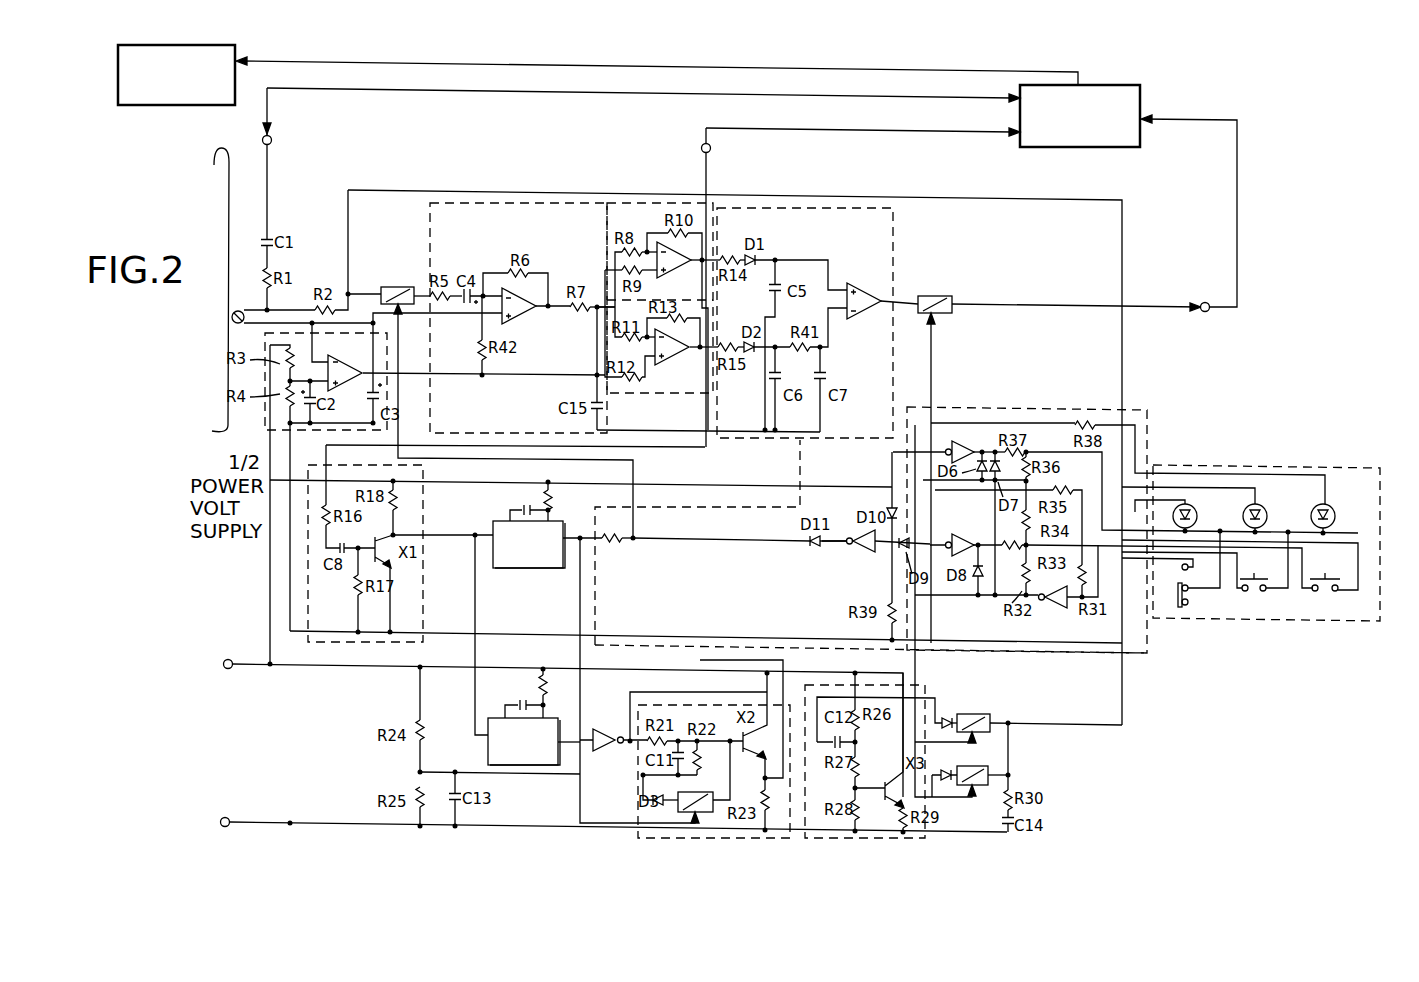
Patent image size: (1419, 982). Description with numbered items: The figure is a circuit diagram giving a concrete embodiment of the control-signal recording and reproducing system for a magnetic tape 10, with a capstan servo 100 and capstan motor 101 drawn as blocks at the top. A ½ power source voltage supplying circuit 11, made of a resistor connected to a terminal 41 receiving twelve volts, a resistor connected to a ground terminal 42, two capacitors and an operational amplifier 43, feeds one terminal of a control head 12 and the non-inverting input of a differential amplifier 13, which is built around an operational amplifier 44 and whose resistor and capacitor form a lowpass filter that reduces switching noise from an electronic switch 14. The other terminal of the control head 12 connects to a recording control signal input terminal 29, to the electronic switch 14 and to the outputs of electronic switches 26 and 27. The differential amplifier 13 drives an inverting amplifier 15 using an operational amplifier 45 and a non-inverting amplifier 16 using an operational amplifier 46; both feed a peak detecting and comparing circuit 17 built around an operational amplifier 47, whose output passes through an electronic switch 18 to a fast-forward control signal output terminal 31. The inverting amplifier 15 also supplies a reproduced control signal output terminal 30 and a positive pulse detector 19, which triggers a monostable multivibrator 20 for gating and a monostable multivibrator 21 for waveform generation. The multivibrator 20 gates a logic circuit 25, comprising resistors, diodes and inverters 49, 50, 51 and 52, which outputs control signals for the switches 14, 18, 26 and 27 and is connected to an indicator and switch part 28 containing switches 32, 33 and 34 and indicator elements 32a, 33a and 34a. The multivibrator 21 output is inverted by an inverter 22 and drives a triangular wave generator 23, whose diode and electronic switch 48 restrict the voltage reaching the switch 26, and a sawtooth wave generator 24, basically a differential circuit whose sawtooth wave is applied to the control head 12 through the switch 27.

The magnetic tape 10 is at (226, 231).
The ½ power source voltage supplying circuit 11 is at (265, 412).
The control head 12 is at (237, 310).
The differential amplifier 13 is at (469, 203).
The electronic switch 14 is at (397, 286).
The inverting amplifier 15 is at (621, 203).
The non-inverting amplifier 16 is at (643, 432).
The peak detecting and comparing circuit 17 is at (780, 208).
The electronic switch 18 is at (941, 453).
The positive pulse detector 19 is at (284, 575).
The monostable multivibrator for gating 20 is at (529, 568).
The monostable multivibrator for waveform generation 21 is at (488, 745).
The inverter 22 is at (605, 728).
The triangular wave generator 23 is at (655, 842).
The sawtooth wave generator 24 is at (932, 840).
The logic circuit 25 is at (966, 407).
The electronic switch 26 is at (974, 717).
The electronic switch 27 is at (991, 773).
The indicator and switch part 28 is at (1196, 465).
The recording control signal input terminal 29 is at (272, 140).
The reproduced control signal output terminal 30 is at (711, 146).
The fast-forward control signal output terminal 31 is at (1203, 302).
The switch 32 is at (1172, 608).
The switch 33 is at (1255, 611).
The switch 34 is at (1325, 611).
The indicator element 32a is at (1197, 516).
The indicator element 33a is at (1267, 516).
The indicator element 34a is at (1335, 516).
The terminal 41 is at (228, 670).
The ground terminal 42 is at (225, 828).
The operational amplifier 43 is at (355, 363).
The operational amplifier 44 is at (530, 316).
The operational amplifier 45 is at (688, 271).
The operational amplifier 46 is at (686, 357).
The operational amplifier 47 is at (858, 287).
The electronic switch 48 is at (702, 793).
The inverter 49 is at (1056, 610).
The inverter 50 is at (963, 449).
The inverter 51 is at (966, 531).
The inverter 52 is at (858, 556).
The capstan servo 100 is at (1143, 102).
The capstan motor 101 is at (178, 110).